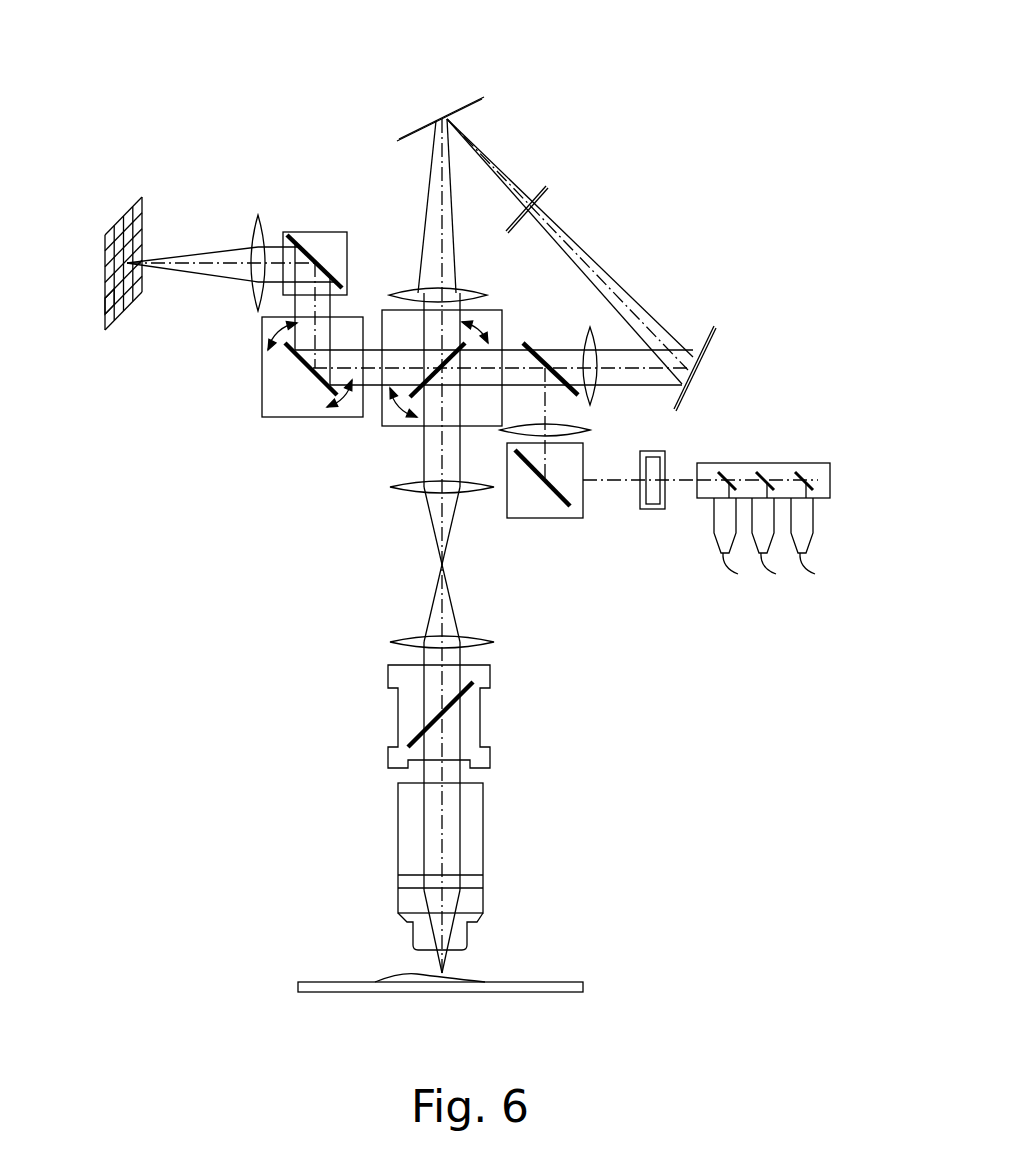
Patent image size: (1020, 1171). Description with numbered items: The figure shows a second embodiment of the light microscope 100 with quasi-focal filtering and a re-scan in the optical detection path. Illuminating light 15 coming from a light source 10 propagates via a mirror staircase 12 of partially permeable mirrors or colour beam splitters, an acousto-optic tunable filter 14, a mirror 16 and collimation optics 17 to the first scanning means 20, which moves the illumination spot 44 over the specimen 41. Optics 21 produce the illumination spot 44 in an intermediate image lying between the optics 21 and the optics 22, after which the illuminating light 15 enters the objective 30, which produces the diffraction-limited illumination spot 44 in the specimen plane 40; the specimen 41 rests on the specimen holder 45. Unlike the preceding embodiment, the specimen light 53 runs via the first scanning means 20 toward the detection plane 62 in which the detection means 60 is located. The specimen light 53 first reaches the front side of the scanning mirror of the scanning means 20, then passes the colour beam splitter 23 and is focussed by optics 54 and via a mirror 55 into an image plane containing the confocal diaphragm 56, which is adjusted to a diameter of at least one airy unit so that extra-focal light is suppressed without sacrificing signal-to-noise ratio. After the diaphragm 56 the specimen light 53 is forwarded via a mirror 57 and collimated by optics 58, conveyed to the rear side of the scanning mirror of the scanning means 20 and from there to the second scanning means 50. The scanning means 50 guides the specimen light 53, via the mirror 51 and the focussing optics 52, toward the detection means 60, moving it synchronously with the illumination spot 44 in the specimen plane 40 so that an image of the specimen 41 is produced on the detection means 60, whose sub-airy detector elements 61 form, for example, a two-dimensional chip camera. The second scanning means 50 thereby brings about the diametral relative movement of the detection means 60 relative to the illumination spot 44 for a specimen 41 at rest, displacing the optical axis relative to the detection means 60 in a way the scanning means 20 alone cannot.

The light source 10 is at (782, 562).
The mirror staircase 12 is at (833, 457).
The acousto-optic tunable filter 14 is at (653, 510).
The illuminating light 15 is at (682, 483).
The mirror 16 is at (545, 492).
The collimation optics 17 is at (590, 430).
The scanning means 20 is at (508, 302).
The optics 21 is at (413, 483).
The optics 22 is at (402, 642).
The colour beam splitter 23 is at (527, 347).
The objective 30 is at (390, 847).
The specimen plane 40 is at (407, 948).
The specimen displacement unit 45 is at (317, 980).
The specimen 41 is at (398, 975).
The illumination spot 44 is at (447, 972).
The scanning means 50 is at (293, 377).
The mirror 51 is at (323, 267).
The focussing optics 52 is at (260, 220).
The specimen light 53 is at (220, 247).
The optics 54 is at (590, 333).
The mirror 55 is at (697, 372).
The confocal diaphragm 56 is at (532, 192).
The mirror 57 is at (430, 127).
The optics 58 is at (395, 293).
The detection means 60 is at (88, 236).
The detection plane 62 is at (120, 212).
The detector elements 61 is at (113, 287).
The light microscope 100 is at (283, 755).